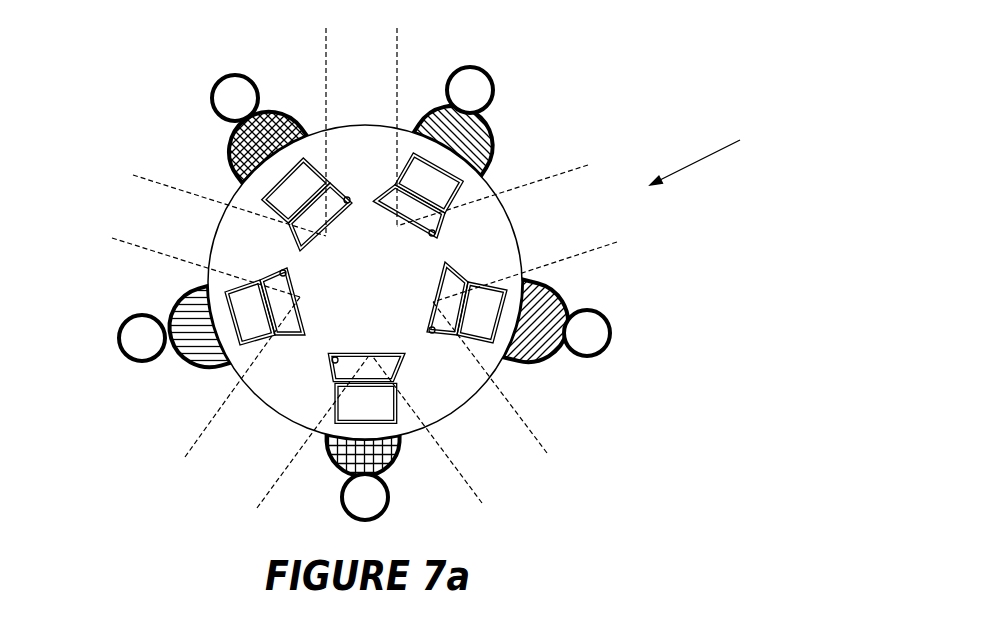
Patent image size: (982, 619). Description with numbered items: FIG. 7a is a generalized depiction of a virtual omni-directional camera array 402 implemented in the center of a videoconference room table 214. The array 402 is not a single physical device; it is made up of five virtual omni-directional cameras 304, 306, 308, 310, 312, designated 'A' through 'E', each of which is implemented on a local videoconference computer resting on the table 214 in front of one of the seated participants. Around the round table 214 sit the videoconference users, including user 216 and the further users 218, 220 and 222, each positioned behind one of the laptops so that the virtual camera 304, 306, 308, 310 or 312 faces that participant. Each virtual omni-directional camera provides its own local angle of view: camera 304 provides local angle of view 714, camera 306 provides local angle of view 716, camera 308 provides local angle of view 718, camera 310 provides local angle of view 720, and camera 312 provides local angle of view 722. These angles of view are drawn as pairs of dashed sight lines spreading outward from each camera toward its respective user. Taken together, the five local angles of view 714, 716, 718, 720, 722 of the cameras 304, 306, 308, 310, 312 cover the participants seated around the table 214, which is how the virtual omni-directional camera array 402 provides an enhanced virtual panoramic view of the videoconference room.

The videoconference room table 214 is at (472, 442).
The user 216 is at (497, 145).
The User C 218 is at (563, 283).
The User D 220 is at (407, 447).
The User E 222 is at (162, 302).
The virtual omni-directional camera 'A' 304 is at (305, 247).
The virtual omni-directional camera 'B' 306 is at (415, 223).
The virtual omni-directional camera 'C' 308 is at (430, 312).
The virtual omni-directional camera 'D' 310 is at (338, 357).
The virtual omni-directional camera 'E' 312 is at (298, 298).
The virtual omni-directional camera array 402 is at (745, 116).
The local angle of view 714 is at (323, 97).
The local angle of view 716 is at (564, 168).
The local angle of view 718 is at (535, 435).
The local angle of view 720 is at (285, 473).
The local angle of view 722 is at (202, 438).